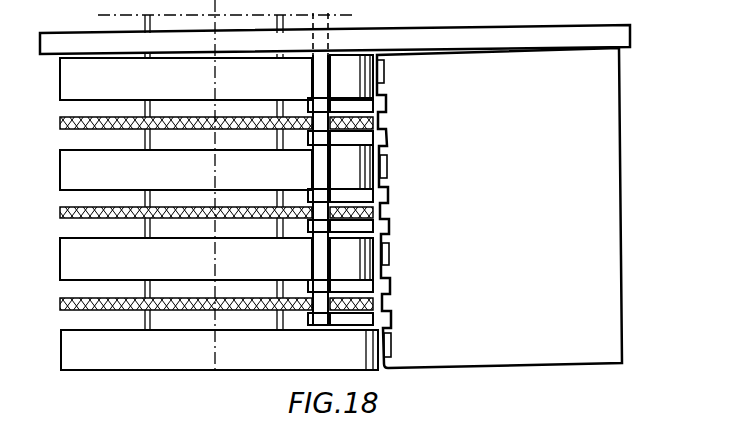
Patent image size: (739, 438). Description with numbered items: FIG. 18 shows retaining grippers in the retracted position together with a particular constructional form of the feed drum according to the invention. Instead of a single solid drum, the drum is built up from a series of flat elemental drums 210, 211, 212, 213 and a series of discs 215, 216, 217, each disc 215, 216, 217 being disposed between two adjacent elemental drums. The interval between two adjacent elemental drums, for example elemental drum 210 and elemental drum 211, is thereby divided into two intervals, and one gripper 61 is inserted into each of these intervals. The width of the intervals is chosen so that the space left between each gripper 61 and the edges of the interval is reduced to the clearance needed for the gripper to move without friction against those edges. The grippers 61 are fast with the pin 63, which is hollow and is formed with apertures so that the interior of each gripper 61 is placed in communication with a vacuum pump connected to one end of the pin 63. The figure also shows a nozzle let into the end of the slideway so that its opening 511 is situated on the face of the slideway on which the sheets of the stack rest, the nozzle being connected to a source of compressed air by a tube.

The flat elemental drum 210 is at (136, 87).
The flat elemental drum 211 is at (147, 181).
The flat elemental drum 212 is at (148, 271).
The flat elemental drum 213 is at (149, 361).
The disc 215 is at (73, 134).
The disc 216 is at (78, 222).
The disc 217 is at (78, 313).
The gripper 61 is at (347, 107).
The pin 63 is at (318, 22).
The opening 511 is at (384, 74).